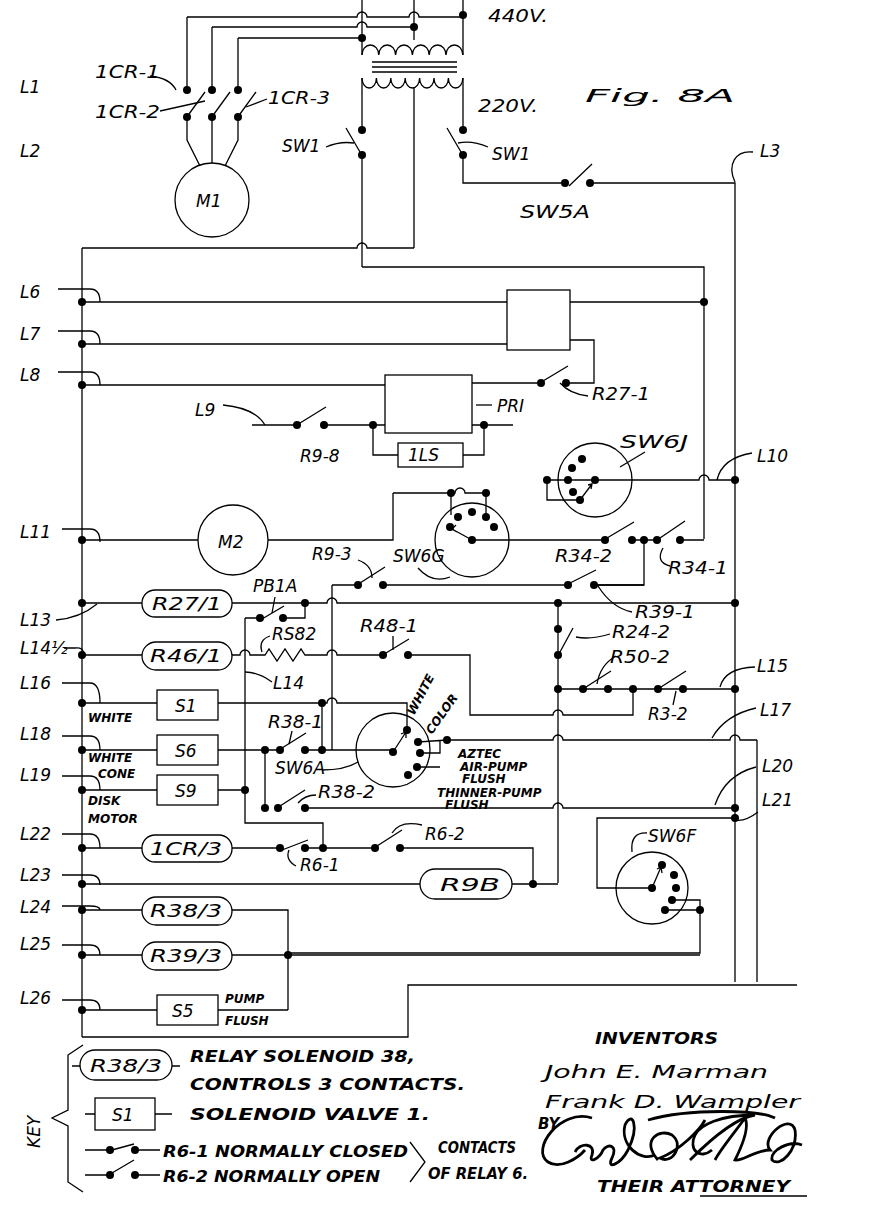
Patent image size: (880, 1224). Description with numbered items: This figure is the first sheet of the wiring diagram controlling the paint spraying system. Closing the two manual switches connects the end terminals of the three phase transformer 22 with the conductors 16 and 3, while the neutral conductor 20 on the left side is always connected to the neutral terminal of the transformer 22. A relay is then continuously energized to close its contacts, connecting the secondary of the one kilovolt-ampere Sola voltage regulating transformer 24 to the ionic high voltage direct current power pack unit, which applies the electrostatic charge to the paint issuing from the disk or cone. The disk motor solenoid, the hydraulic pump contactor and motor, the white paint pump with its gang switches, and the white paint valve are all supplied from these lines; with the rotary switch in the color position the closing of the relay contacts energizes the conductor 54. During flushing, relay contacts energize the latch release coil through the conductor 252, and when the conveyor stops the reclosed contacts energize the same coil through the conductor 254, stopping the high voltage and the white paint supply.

The supply conductor 3 is at (737, 231).
The conductor 16 is at (704, 331).
The neutral conductor 20 is at (84, 432).
The transformer 22 is at (372, 65).
The Sola voltage regulating transformer 24 is at (507, 318).
The color paint supply circuit conductor 54 is at (758, 918).
The conductor 252 is at (245, 818).
The conductor 254 is at (560, 784).